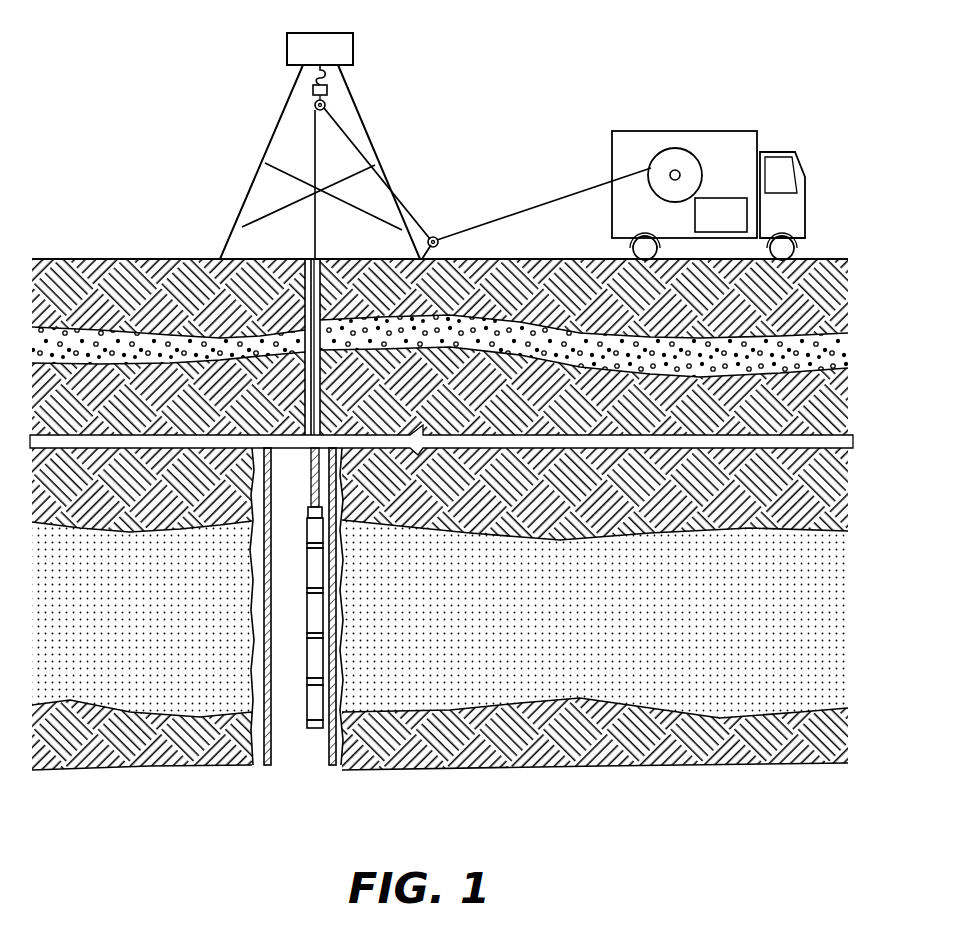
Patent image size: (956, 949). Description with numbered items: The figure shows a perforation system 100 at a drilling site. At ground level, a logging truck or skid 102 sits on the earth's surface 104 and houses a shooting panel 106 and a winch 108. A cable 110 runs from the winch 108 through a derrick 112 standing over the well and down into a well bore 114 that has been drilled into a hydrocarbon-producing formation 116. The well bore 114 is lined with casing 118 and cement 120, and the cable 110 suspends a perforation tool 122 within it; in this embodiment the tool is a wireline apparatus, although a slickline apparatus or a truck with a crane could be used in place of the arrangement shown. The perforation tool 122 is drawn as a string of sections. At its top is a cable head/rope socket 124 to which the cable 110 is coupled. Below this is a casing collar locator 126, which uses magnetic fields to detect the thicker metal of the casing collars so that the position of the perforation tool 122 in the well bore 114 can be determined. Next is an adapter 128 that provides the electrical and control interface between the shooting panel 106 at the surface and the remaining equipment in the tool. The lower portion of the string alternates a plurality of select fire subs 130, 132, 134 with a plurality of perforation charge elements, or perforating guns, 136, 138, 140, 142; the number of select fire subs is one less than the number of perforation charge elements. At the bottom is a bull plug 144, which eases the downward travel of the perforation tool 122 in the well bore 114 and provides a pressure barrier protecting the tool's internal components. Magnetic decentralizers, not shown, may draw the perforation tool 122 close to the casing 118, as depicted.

The perforation system 100 is at (675, 75).
The logging truck or skid 102 is at (710, 131).
The earth's surface 104 is at (108, 258).
The shooting panel 106 is at (738, 226).
The winch 108 is at (660, 152).
The cable 110 is at (537, 202).
The derrick 112 is at (320, 33).
The well bore 114 is at (310, 258).
The hydrocarbon-producing formation 116 is at (752, 639).
The casing 118 is at (332, 766).
The cement 120 is at (262, 766).
The perforation tool 122 is at (357, 514).
The cable head/rope socket 124 is at (308, 511).
The casing collar locator 126 is at (308, 527).
The adapter 128 is at (308, 542).
The select fire sub 130 is at (307, 590).
The select fire sub 132 is at (307, 635).
The select fire sub 134 is at (307, 680).
The perforation charge element 136 is at (307, 562).
The perforation charge element 138 is at (307, 613).
The perforation charge element 140 is at (307, 657).
The perforation charge element 142 is at (307, 703).
The bull plug 144 is at (307, 725).